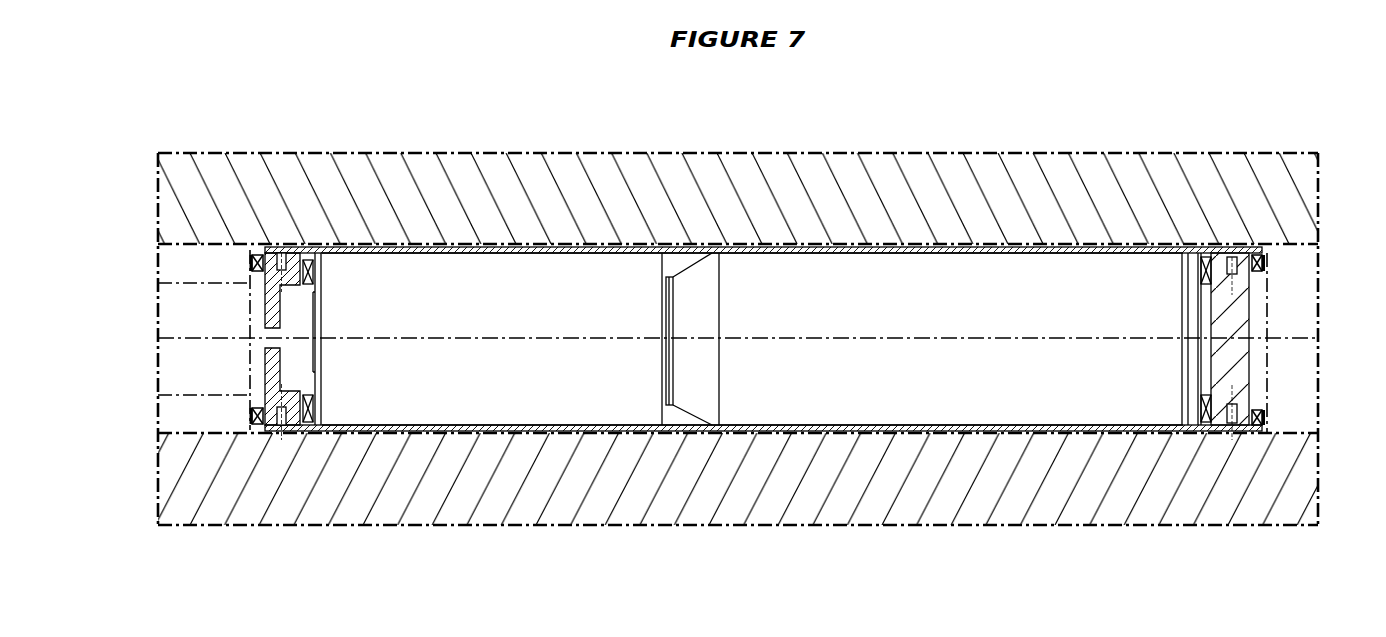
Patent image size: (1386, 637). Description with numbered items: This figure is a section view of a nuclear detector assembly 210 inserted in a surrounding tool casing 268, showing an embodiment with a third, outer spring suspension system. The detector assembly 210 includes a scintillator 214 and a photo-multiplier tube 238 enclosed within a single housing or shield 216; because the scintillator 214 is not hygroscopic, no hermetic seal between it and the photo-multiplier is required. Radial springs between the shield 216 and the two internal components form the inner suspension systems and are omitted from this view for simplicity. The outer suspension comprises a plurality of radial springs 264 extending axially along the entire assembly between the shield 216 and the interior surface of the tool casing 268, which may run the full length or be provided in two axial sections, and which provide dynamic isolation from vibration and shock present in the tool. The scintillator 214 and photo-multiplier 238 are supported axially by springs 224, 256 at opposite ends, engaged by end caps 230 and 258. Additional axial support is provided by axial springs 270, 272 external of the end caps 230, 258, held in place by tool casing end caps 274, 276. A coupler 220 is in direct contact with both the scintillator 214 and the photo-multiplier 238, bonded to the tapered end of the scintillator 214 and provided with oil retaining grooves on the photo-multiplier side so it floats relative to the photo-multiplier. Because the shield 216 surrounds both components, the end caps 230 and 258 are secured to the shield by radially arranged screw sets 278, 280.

The detector assembly 210 is at (547, 222).
The scintillator 214 is at (922, 281).
The shield 216 is at (793, 425).
The coupler 220 is at (668, 310).
The spring 224 is at (1196, 396).
The end cap 230 is at (1185, 304).
The photo-multiplier tube 238 is at (492, 339).
The spring 256 is at (313, 406).
The end cap 258 is at (298, 304).
The radial springs 264 is at (941, 245).
The tool casing 268 is at (968, 532).
The axial spring 270 is at (252, 258).
The axial spring 272 is at (1265, 266).
The tool casing end cap 274 is at (1290, 320).
The tool casing end cap 276 is at (185, 376).
The screw set 278 is at (1243, 245).
The screw set 280 is at (281, 250).